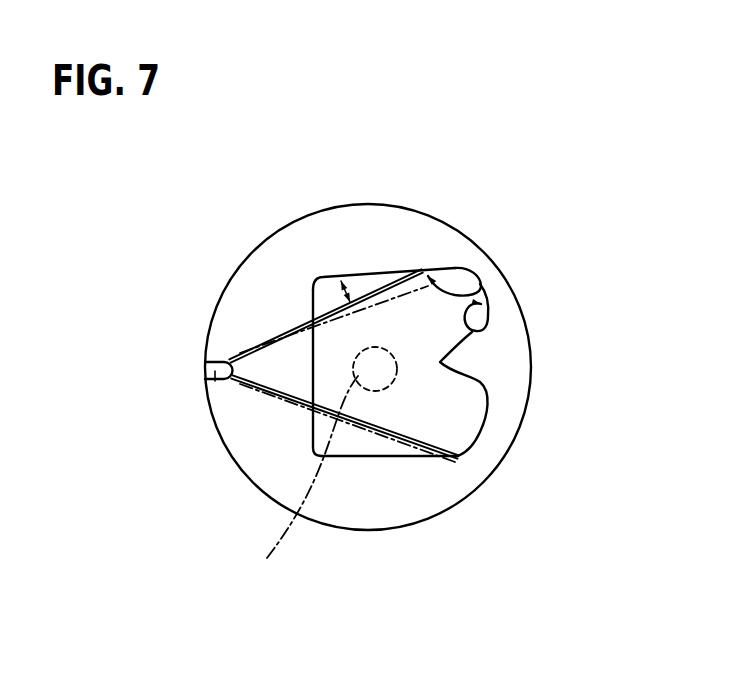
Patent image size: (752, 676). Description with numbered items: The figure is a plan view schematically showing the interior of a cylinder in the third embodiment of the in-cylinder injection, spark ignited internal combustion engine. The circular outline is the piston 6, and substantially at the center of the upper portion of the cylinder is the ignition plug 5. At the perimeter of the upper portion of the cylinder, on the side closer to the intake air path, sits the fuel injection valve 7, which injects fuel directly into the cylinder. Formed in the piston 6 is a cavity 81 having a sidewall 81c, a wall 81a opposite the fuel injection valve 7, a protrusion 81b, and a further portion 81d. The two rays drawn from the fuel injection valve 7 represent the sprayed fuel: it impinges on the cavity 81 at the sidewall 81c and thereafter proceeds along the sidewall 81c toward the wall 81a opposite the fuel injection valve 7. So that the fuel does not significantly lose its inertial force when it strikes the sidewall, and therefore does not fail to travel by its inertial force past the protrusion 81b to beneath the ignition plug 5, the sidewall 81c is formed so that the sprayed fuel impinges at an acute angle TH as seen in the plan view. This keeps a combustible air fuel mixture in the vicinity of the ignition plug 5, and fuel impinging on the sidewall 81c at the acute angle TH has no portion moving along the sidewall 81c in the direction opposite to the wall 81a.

The ignition plug 5 is at (267, 558).
The piston 6 is at (234, 304).
The fuel injection valve 7 is at (218, 384).
The cavity 81 is at (473, 370).
The wall opposite the fuel injection valve 81a is at (465, 327).
The protrusion 81b is at (463, 367).
The sidewall 81c is at (480, 283).
The cam bottom edge 81d is at (412, 420).
The acute angle TH is at (313, 298).